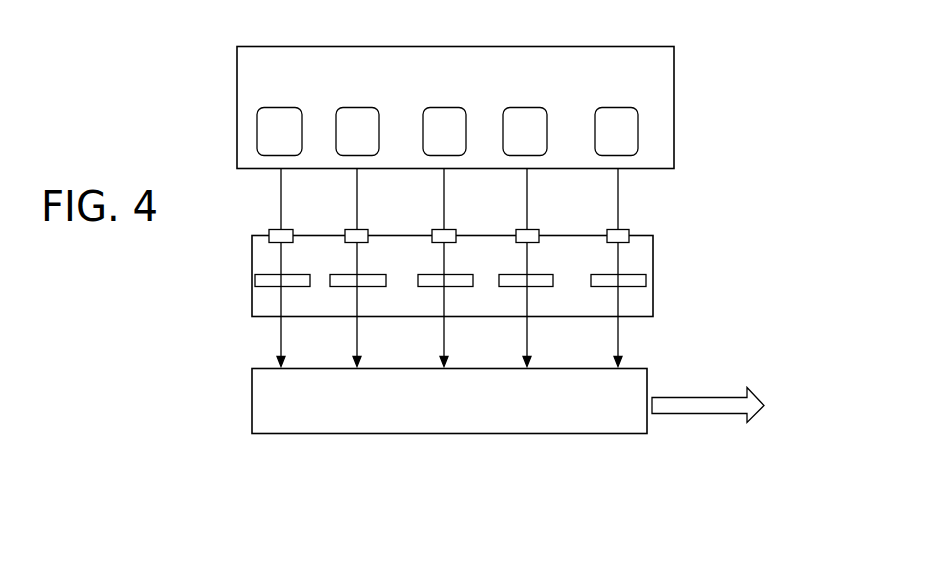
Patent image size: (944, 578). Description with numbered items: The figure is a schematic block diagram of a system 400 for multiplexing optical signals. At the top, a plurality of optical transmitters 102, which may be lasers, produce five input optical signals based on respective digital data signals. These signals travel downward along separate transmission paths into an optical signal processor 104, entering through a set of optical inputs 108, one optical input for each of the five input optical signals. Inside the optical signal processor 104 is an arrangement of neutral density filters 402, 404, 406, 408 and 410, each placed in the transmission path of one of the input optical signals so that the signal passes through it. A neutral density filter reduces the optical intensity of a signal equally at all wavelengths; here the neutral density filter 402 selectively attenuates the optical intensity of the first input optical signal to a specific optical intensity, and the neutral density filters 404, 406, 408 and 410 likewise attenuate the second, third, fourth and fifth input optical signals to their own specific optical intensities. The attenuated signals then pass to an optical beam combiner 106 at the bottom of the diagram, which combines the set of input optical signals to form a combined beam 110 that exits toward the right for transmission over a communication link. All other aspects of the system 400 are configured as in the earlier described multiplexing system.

The system for multiplexing optical signals 400 is at (761, 115).
The optical transmitters 102 is at (675, 71).
The optical signal processor 104 is at (653, 260).
The optical beam combiner 106 is at (652, 372).
The optical inputs 108 is at (293, 229).
The combined beam 110 is at (700, 413).
The neutral density filter 402 is at (277, 285).
The neutral density filter 404 is at (348, 285).
The neutral density filter 406 is at (437, 285).
The neutral density filter 408 is at (512, 285).
The neutral density filter 410 is at (598, 285).